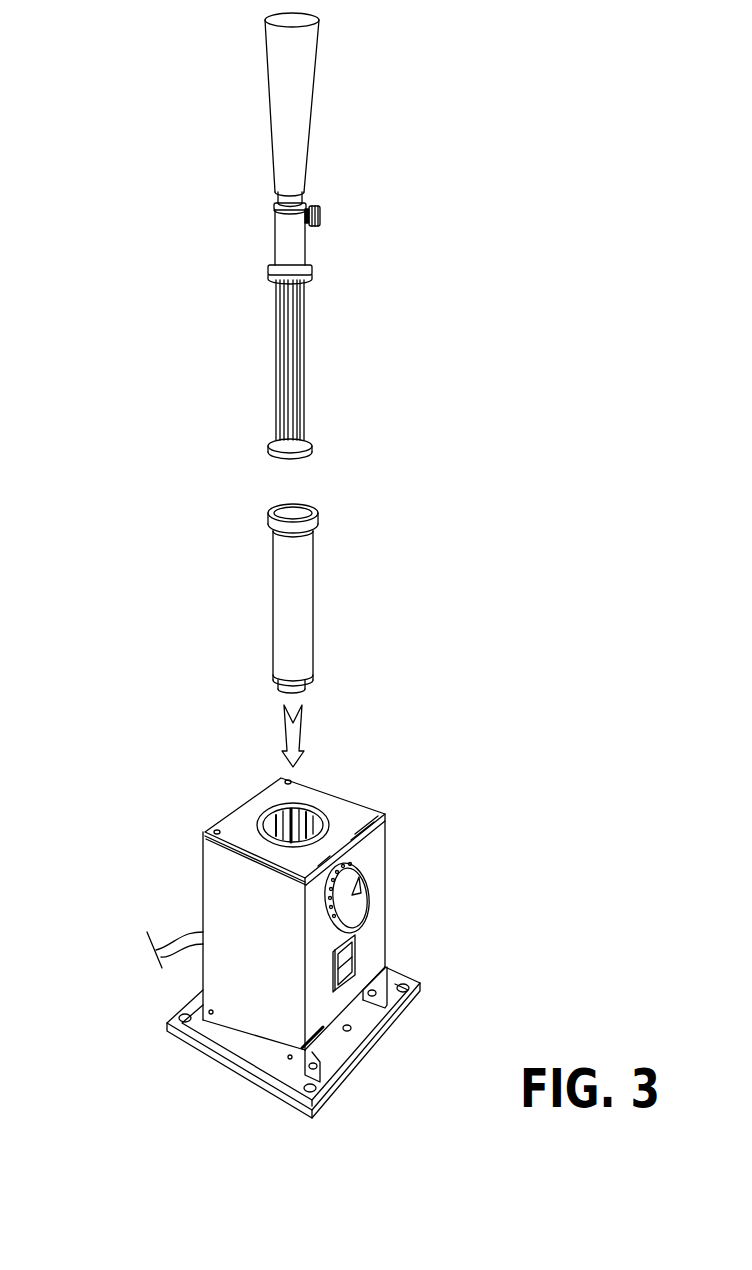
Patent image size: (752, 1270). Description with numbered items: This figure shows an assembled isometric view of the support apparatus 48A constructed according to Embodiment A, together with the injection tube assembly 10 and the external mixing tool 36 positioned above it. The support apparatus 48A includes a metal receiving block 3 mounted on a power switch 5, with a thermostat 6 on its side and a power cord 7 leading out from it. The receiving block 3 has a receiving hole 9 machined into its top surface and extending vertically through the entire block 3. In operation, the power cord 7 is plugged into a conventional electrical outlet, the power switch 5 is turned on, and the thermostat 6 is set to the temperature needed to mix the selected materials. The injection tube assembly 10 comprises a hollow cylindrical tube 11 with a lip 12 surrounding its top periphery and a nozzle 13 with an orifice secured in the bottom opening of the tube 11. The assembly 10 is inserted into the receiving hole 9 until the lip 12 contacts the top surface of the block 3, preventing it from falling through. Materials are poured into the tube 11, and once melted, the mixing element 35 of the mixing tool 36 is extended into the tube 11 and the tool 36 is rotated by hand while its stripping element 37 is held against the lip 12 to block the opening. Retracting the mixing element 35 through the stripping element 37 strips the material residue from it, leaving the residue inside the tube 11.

The mixing tool 36 is at (239, 237).
The mixing element 35 is at (278, 368).
The stripping element 37 is at (314, 447).
The injection tube assembly 10 is at (298, 601).
The lip 12 is at (267, 518).
The hollow cylindrical tube 11 is at (290, 604).
The nozzle 13 is at (280, 685).
The support apparatus 48A is at (253, 945).
The receiving block 3 is at (295, 782).
The receiving hole 9 is at (277, 830).
The thermostat 6 is at (355, 905).
The power cord 7 is at (185, 928).
The power switch 5 is at (408, 990).